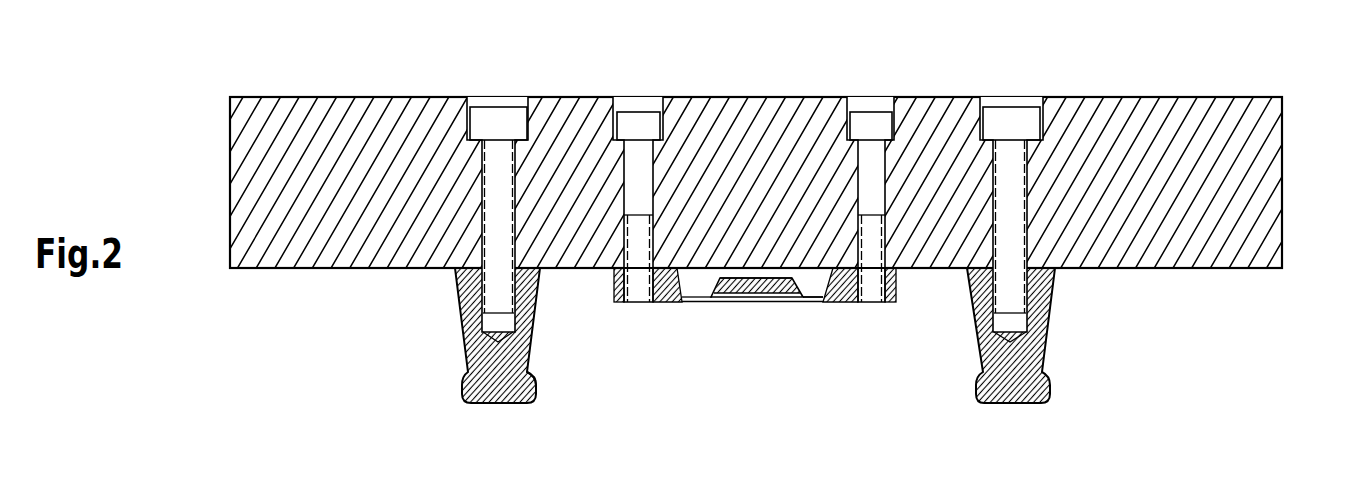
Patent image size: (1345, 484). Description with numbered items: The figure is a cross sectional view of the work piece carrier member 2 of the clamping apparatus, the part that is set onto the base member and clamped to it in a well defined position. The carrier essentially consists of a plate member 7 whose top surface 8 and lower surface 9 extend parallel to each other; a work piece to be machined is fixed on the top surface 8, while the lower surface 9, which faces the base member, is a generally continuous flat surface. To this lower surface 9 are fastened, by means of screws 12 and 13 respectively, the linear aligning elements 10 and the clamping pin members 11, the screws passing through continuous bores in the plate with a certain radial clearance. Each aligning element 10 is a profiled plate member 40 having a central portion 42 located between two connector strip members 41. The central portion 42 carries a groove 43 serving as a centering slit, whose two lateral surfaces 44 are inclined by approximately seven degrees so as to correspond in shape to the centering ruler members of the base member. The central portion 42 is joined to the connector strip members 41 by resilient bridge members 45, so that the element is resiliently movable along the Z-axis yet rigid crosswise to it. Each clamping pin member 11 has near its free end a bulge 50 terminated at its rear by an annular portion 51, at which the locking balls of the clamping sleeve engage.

The work piece carrier member 2 is at (744, 248).
The plate member 7 is at (287, 165).
The top surface 8 is at (281, 97).
The lower surface 9 is at (285, 268).
The linear aligning element 10 is at (762, 341).
The clamping pin member 11 is at (503, 403).
The screw 12 is at (637, 123).
The screw 13 is at (497, 115).
The profiled plate member 40 is at (762, 341).
The connector strip member 41 is at (616, 303).
The central portion 42 is at (735, 299).
The groove 43 is at (745, 299).
The lateral surface 44 is at (786, 303).
The resilient bridge member 45 is at (690, 303).
The bulge 50 is at (466, 392).
The annular portion 51 is at (468, 376).